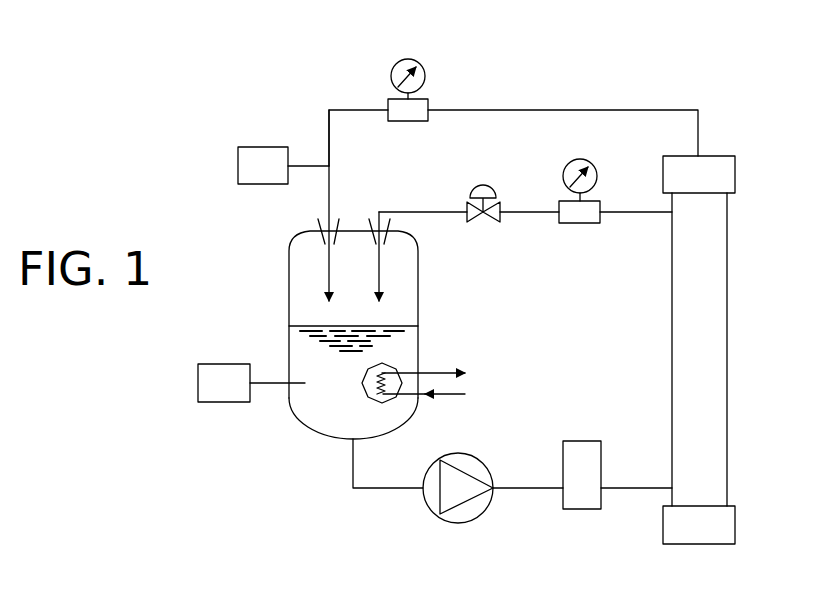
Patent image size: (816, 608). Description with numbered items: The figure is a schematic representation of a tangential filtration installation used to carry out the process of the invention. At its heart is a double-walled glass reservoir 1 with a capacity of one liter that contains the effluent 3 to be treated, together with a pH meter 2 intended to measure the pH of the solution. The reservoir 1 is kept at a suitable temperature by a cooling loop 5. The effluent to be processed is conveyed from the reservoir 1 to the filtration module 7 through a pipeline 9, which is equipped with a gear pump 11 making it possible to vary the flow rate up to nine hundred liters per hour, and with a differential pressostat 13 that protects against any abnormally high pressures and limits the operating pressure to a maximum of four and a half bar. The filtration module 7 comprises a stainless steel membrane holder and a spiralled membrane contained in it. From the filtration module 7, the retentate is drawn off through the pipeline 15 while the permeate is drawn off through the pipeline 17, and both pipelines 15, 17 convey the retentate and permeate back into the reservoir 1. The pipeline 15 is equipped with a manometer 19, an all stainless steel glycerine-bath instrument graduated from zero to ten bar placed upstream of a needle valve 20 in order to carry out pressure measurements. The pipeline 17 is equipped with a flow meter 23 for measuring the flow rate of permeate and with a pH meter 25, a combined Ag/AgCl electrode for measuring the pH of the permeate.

The double-walled glass reservoir 1 is at (313, 433).
The pH meter 2 is at (217, 363).
The effluent 3 is at (400, 348).
The cooling loop 5 is at (440, 385).
The filtration module 7 is at (708, 352).
The pipeline 9 is at (374, 488).
The gear pump 11 is at (463, 514).
The differential pressostat 13 is at (580, 508).
The pipeline 15 is at (640, 213).
The pipeline 17 is at (578, 108).
The manometer 19 is at (593, 179).
The needle valve 20 is at (482, 182).
The flow meter 23 is at (405, 57).
The pH meter 25 is at (240, 160).